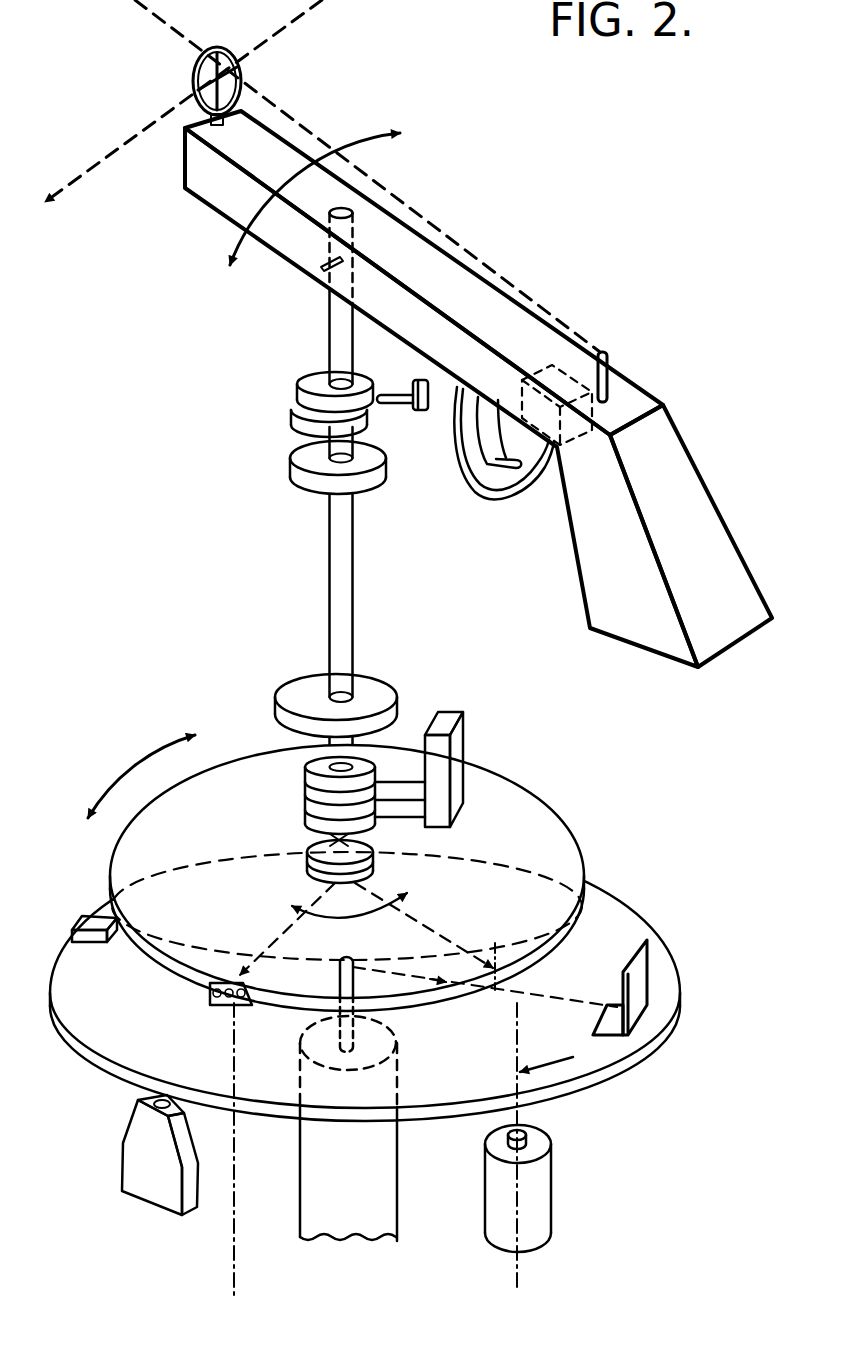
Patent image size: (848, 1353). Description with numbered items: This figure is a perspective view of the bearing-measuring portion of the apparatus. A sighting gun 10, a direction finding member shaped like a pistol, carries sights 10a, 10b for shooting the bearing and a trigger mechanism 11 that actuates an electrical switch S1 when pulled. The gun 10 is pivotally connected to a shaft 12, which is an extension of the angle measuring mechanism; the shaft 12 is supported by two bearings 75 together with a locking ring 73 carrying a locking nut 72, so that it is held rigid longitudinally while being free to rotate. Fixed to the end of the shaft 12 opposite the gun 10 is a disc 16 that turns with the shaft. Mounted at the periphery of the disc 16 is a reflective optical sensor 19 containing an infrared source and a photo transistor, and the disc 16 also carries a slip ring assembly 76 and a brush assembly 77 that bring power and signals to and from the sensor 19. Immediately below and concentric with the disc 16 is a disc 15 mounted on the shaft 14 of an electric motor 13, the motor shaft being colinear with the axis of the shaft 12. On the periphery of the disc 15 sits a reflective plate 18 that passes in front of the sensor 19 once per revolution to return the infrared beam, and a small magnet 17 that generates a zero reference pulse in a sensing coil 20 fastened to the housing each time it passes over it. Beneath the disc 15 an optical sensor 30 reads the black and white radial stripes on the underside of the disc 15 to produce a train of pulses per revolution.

The sighting gun 10 is at (197, 172).
The sight 10a is at (243, 77).
The sight 10b is at (607, 362).
The trigger mechanism 11 is at (512, 470).
The shaft 12 is at (335, 338).
The electric motor 13 is at (305, 1202).
The shaft of electric motor 14 is at (387, 1018).
The disc 15 is at (615, 913).
The disc 16 is at (558, 845).
The magnet 17 is at (78, 921).
The reflective plate 18 is at (635, 978).
The reflective optical sensor 19 is at (210, 990).
The sensing coil 20 is at (540, 1188).
The optical sensor 30 is at (133, 1163).
The locking nut 72 is at (417, 380).
The locking ring 73 is at (305, 388).
The bearings 75 is at (307, 685).
The slip ring assembly 76 is at (300, 790).
The brush assembly 77 is at (463, 726).
The electrical switch S1 is at (522, 386).